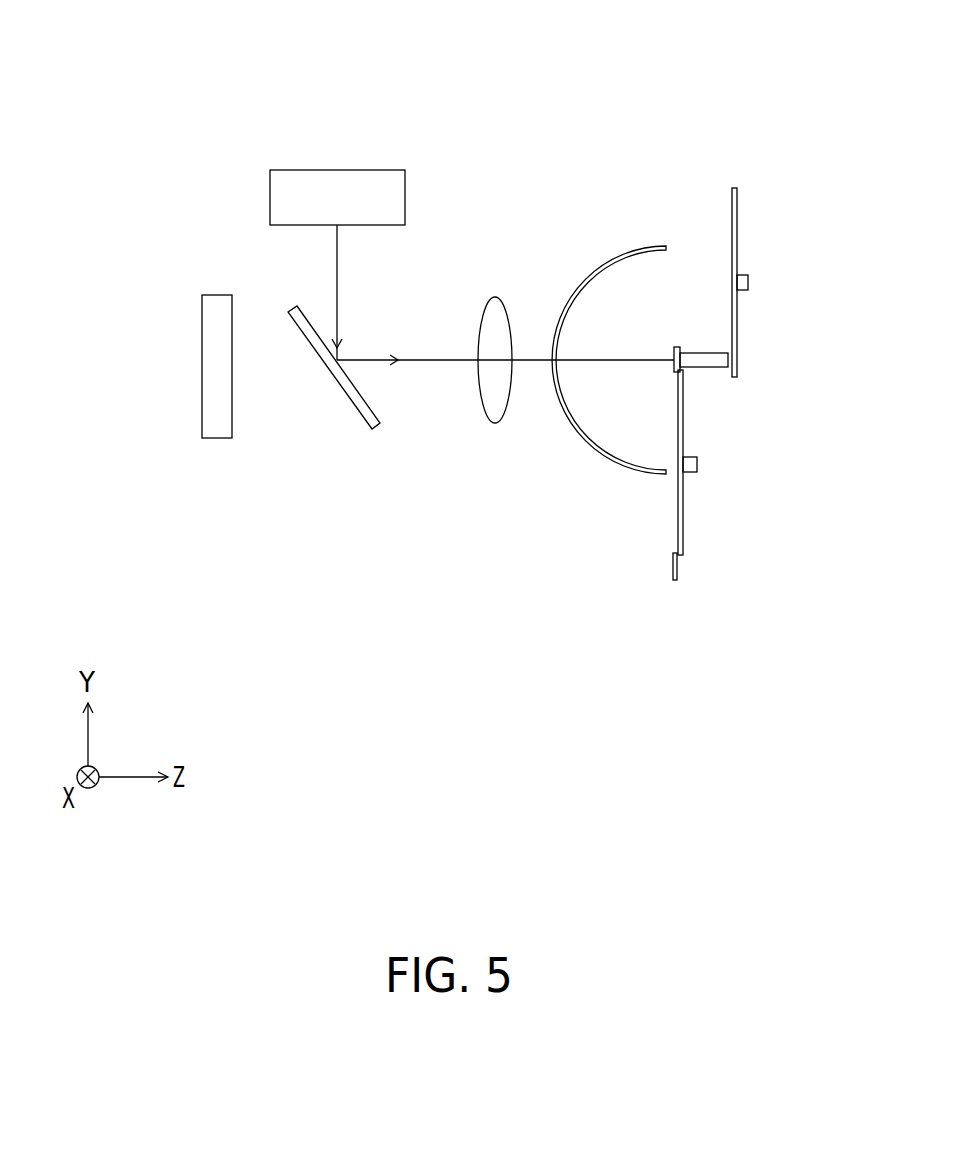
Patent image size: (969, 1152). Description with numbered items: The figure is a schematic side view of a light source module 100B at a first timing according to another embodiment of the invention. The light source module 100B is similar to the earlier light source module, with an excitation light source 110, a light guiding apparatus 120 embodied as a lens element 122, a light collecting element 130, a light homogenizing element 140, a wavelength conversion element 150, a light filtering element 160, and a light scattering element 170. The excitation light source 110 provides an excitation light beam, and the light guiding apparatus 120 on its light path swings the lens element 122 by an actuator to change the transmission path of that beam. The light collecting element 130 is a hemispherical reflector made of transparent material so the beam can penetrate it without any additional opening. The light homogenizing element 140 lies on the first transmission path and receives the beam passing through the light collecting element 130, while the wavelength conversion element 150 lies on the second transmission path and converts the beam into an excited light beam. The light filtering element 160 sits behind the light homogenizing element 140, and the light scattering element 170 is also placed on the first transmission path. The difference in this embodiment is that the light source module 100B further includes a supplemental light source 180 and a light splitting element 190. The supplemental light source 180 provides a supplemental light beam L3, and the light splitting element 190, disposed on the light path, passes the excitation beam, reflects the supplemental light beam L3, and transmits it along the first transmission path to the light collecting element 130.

The light source module 100B is at (860, 688).
The excitation light source 110 is at (202, 375).
The light guiding apparatus 120 is at (499, 446).
The lens element 122 is at (497, 423).
The light collecting element 130 is at (600, 263).
The light homogenizing element 140 is at (703, 352).
The wavelength conversion element 150 is at (683, 515).
The light filtering element 160 is at (737, 188).
The light scattering element 170 is at (675, 580).
The supplemental light source 180 is at (338, 170).
The light splitting element 190 is at (372, 430).
The supplemental light beam L3 is at (337, 253).